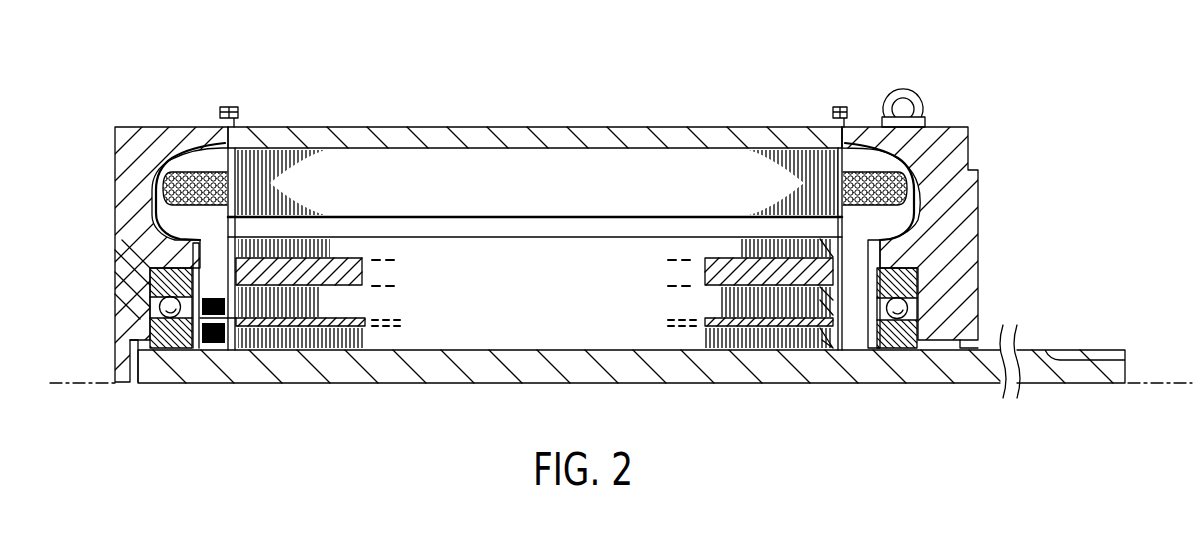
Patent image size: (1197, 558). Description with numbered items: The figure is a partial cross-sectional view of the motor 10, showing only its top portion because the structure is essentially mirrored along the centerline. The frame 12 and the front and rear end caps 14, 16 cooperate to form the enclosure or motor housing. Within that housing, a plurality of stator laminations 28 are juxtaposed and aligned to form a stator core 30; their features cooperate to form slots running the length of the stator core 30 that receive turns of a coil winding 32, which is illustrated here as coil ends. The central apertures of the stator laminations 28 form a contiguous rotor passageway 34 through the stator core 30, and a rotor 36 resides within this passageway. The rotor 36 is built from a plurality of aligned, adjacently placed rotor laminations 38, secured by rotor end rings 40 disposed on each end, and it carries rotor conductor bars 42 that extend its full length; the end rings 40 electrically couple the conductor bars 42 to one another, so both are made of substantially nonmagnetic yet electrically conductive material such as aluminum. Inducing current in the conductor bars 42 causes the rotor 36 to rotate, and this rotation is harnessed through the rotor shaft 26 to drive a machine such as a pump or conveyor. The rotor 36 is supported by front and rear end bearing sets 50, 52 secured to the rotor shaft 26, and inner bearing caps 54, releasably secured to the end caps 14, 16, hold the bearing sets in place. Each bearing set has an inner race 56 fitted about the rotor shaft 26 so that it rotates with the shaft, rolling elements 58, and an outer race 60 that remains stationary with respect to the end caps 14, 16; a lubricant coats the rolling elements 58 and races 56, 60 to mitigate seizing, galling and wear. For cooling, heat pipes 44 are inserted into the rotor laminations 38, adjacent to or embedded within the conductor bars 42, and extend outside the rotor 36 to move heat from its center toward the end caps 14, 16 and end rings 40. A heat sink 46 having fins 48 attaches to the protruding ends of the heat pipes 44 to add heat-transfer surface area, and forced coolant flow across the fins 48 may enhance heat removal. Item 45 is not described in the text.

The motor 10 is at (462, 70).
The frame 12 is at (328, 127).
The front end cap 14 is at (968, 130).
The rear end cap 16 is at (130, 127).
The rotor shaft 26 is at (1118, 372).
The stator laminations 28 is at (285, 147).
The stator core 30 is at (600, 170).
The coil winding 32 is at (863, 172).
The rotor passageway 34 is at (400, 218).
The rotor 36 is at (595, 305).
The rotor laminations 38 is at (290, 350).
The rotor end rings 40 is at (238, 337).
The rotor conductor bars 42 is at (300, 262).
The heat pipes 44 is at (325, 350).
The spacer 45 is at (225, 347).
The heat sink 46 is at (197, 350).
The fins 48 is at (213, 237).
The front end bearing set 50 is at (948, 263).
The rear end bearing set 52 is at (153, 273).
The inner bearing caps 54 is at (182, 253).
The inner race 56 is at (150, 350).
The rolling elements 58 is at (158, 309).
The outer race 60 is at (148, 296).